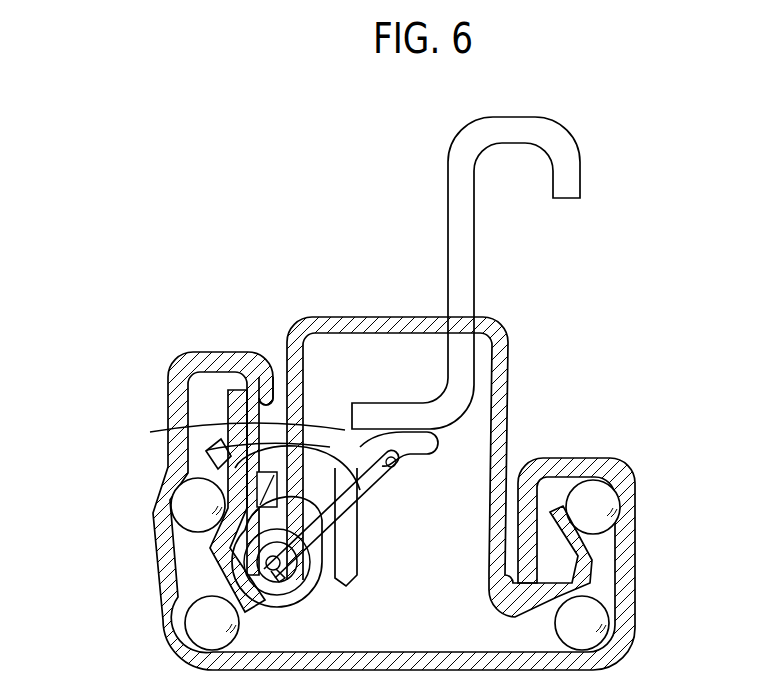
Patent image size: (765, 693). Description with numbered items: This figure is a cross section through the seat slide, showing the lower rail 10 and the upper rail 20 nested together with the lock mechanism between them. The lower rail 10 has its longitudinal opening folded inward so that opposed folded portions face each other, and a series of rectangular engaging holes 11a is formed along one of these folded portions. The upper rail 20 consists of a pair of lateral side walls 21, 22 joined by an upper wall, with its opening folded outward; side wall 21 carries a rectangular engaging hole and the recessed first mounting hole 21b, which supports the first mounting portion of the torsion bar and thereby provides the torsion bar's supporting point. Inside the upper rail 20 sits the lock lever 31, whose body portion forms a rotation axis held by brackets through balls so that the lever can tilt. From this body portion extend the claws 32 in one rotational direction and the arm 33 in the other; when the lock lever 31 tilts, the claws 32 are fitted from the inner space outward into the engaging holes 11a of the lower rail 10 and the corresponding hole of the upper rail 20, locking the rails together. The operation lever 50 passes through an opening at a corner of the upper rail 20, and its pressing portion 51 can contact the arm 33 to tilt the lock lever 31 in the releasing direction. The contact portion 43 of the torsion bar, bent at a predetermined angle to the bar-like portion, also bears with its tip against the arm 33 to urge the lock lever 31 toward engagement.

The lower rail 10 is at (601, 445).
The rectangular engaging holes 11a is at (281, 405).
The upper rail 20 is at (316, 305).
The side wall 21 is at (286, 340).
The first mounting hole 21b is at (330, 505).
The side wall 22 is at (505, 422).
The lock lever 31 is at (347, 552).
The claws 32 is at (208, 450).
The arm 33 is at (412, 440).
The contact portion 43 is at (400, 466).
The operation lever 50 is at (586, 149).
The pressing portion 51 is at (458, 266).